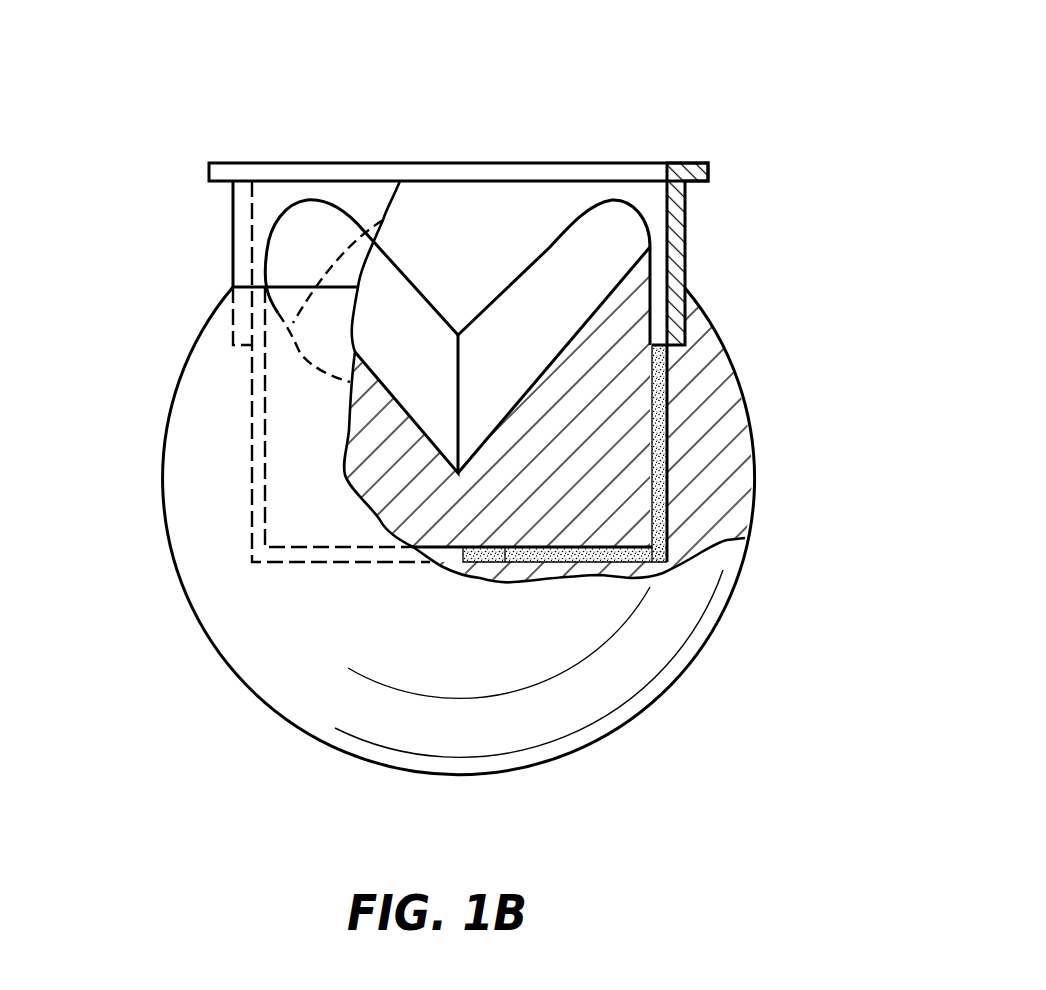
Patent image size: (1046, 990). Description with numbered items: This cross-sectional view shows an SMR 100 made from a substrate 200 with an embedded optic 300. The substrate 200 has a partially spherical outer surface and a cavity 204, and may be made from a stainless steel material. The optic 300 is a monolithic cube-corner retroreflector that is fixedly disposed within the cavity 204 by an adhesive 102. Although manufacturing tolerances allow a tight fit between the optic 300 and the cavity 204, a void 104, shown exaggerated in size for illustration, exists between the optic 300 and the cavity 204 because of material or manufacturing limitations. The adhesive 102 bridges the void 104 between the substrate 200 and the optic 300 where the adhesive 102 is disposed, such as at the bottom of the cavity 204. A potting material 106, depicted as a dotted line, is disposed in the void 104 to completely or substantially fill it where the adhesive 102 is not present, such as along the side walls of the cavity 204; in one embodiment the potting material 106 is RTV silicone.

The SMR 100 is at (678, 83).
The adhesive 102 is at (483, 555).
The void 104 is at (543, 553).
The potting material 106 is at (655, 447).
The substrate 200 is at (223, 658).
The cavity 204 is at (253, 408).
The optic 300 is at (643, 568).